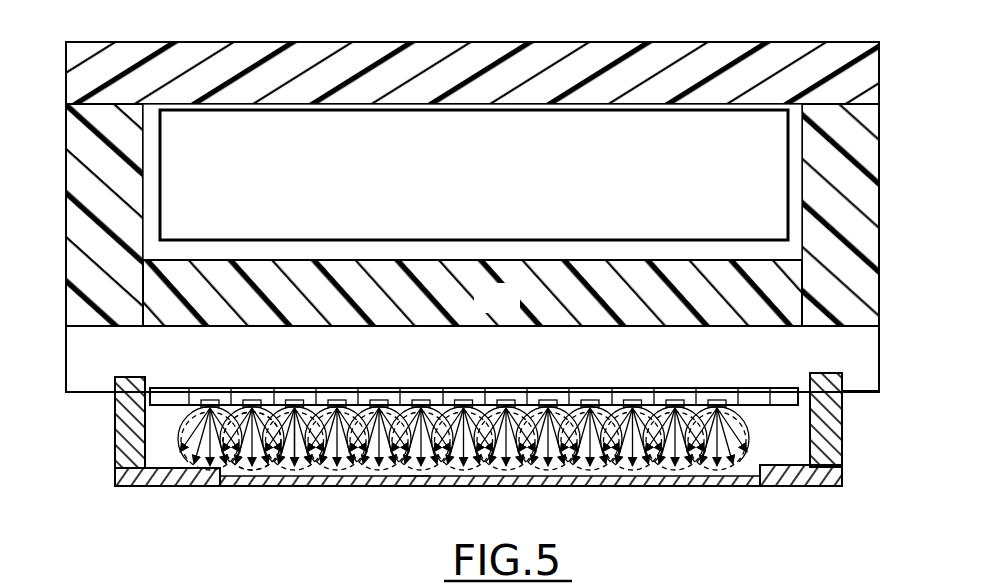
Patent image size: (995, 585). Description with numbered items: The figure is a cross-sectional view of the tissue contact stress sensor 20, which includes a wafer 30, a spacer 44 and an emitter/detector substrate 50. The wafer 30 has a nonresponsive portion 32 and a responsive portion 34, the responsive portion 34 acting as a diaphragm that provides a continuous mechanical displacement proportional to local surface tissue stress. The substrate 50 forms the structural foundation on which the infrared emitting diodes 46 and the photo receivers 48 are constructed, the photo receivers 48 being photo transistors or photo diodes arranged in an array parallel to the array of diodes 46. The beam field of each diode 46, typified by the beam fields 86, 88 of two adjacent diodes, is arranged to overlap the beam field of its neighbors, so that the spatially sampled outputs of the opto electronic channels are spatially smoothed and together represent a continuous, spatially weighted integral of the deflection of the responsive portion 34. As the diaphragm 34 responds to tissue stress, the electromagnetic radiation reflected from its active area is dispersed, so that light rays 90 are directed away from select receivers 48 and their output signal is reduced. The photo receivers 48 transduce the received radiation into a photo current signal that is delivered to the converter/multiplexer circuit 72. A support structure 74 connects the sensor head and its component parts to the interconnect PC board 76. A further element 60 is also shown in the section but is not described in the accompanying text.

The sensor 20 is at (92, 408).
The wafer 30 is at (508, 493).
The nonresponsive portion 32 is at (166, 470).
The responsive portion 34 is at (397, 482).
The spacer 44 is at (110, 386).
The infrared emitting diodes 46 is at (336, 390).
The photo receivers 48 is at (162, 392).
The emitter/detector substrate 50 is at (381, 362).
The reflector strip 60 is at (751, 472).
The converter/multiplexer circuit 72 is at (537, 175).
The support structure 74 is at (515, 311).
The interconnect PC board 76 is at (543, 42).
The beam field 86 is at (262, 478).
The beam field 88 is at (287, 478).
The light rays 90 is at (414, 470).